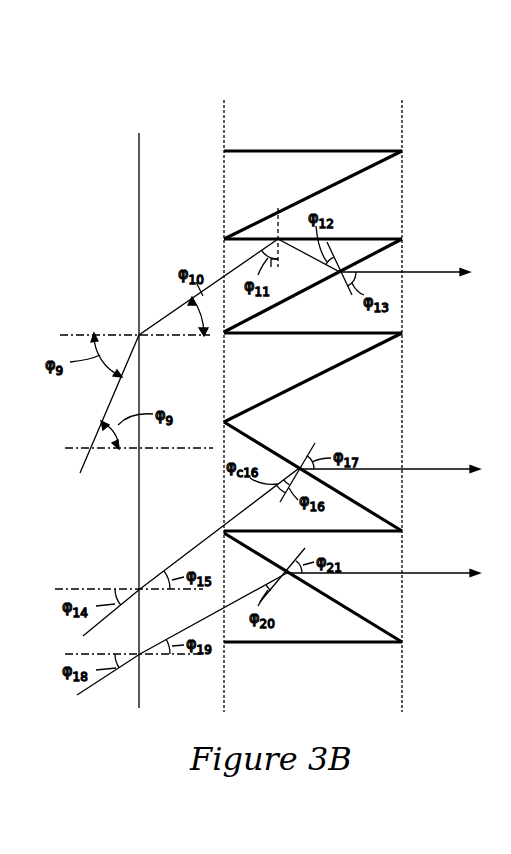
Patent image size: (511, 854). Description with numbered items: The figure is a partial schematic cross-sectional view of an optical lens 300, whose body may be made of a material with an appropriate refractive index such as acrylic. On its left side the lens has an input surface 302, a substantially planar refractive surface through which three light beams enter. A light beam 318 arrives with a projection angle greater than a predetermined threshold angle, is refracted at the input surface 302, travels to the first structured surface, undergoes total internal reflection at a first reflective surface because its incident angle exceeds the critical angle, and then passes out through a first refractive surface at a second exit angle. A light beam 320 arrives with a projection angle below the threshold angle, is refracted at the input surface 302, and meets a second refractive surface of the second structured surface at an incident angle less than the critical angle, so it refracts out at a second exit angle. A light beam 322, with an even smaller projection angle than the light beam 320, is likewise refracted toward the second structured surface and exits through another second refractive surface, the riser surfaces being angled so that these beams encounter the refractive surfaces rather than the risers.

The optical lens 300 is at (155, 98).
The input surface 302 is at (139, 232).
The light beam 318 is at (107, 411).
The light beam 320 is at (90, 631).
The light beam 322 is at (82, 698).